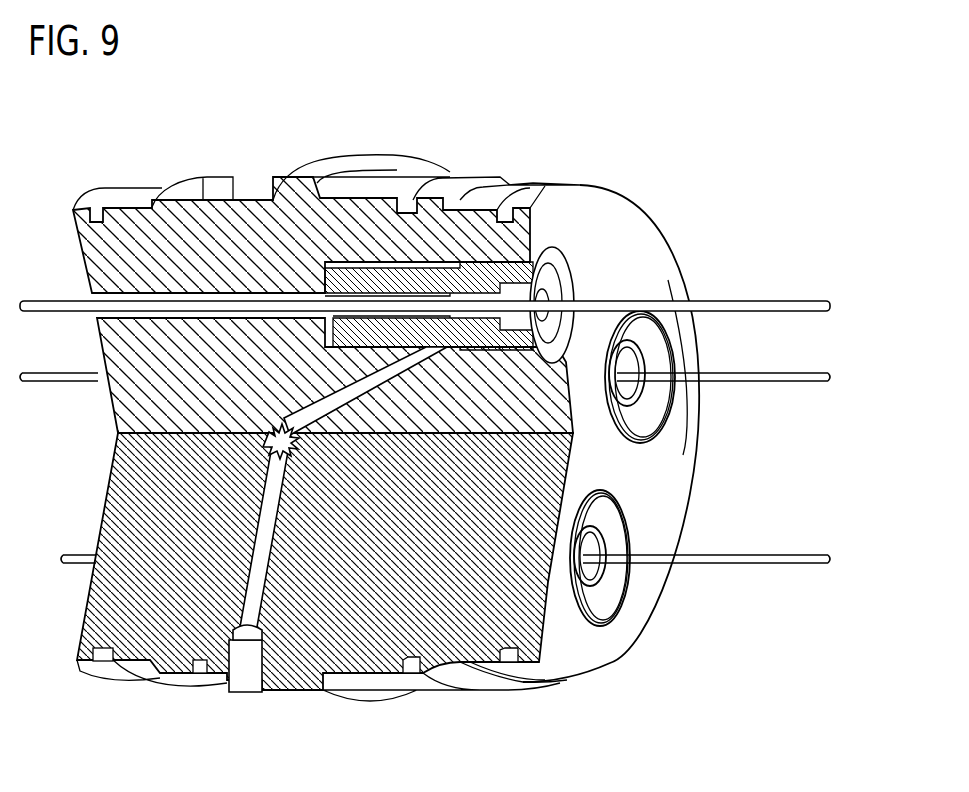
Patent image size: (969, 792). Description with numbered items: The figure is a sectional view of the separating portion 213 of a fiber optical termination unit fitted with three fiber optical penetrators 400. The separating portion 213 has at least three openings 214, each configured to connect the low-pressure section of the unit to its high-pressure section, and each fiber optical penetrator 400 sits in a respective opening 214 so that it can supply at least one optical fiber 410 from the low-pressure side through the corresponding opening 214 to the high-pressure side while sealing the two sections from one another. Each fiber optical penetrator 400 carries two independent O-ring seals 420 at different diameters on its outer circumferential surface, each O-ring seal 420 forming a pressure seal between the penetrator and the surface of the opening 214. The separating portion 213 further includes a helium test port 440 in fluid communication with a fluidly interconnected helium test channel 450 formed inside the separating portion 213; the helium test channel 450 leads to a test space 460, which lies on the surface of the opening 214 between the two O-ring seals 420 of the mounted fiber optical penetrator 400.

The separating portion 213 is at (232, 142).
The opening 214 is at (570, 288).
The fiber optical penetrator 400 is at (547, 270).
The optical fiber 410 is at (712, 313).
The O-ring seal 420 is at (437, 268).
The helium test port 440 is at (246, 668).
The helium test channel 450 is at (265, 572).
The test space 460 is at (350, 363).